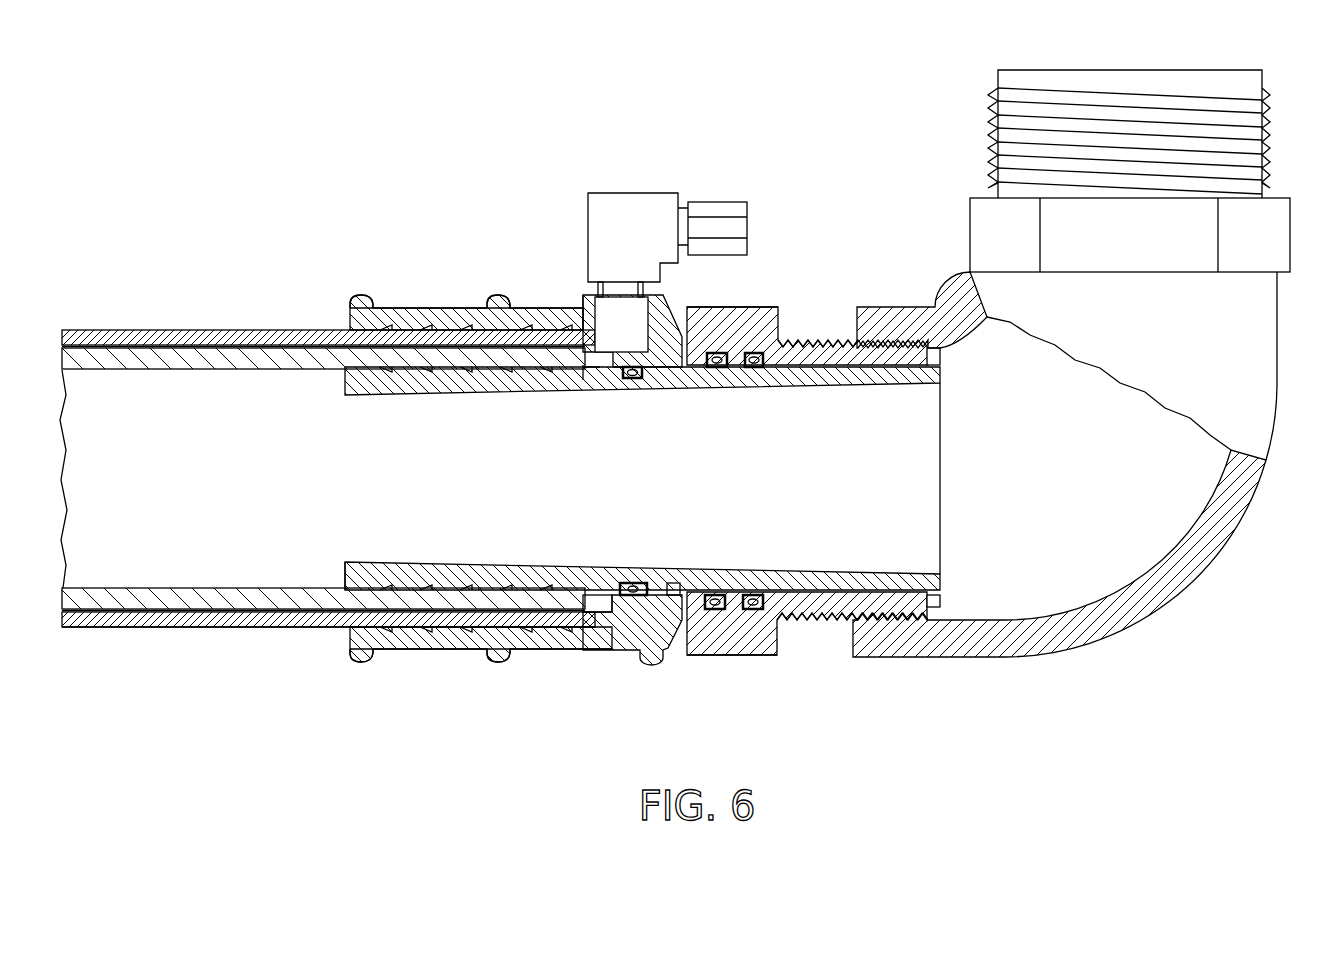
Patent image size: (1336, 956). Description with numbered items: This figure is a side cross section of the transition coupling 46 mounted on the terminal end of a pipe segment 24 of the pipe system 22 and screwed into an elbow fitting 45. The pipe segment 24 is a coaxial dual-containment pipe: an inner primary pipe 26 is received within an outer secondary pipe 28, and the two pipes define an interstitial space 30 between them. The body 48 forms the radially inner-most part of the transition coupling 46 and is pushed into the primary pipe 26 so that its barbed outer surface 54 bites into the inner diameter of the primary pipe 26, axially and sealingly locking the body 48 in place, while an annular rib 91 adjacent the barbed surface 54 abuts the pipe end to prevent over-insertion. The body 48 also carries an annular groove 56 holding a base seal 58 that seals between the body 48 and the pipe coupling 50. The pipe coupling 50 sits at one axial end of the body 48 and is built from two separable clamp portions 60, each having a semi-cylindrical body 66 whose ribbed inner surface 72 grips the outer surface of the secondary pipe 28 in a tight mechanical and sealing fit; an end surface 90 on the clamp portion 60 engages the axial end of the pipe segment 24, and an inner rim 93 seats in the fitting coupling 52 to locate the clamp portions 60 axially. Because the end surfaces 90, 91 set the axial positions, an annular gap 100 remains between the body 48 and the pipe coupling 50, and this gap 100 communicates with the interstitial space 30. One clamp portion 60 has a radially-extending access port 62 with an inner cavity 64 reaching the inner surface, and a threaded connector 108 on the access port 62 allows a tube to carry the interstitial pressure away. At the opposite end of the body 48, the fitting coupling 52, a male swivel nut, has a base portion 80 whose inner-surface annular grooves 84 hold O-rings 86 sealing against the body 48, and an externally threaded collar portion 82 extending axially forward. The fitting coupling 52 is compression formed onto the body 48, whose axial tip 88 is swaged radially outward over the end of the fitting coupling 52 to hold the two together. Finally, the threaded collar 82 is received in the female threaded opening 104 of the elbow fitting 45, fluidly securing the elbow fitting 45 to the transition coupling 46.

The pipe system 22 is at (97, 648).
The pipe segment 24 is at (143, 648).
The primary pipe 26 is at (175, 365).
The secondary pipe 28 is at (112, 335).
The interstitial space 30 is at (250, 348).
The elbow fitting 45 is at (1268, 380).
The transition coupling 46 is at (792, 247).
The body 48 is at (815, 586).
The pipe coupling 50 is at (405, 252).
The fitting coupling 52 is at (840, 298).
The barbed outer surface 54 is at (412, 585).
The annular groove 56 is at (675, 640).
The base seal 58 is at (633, 583).
The clamp portion 60 is at (380, 318).
The access port 62 is at (662, 311).
The inner cavity 64 is at (618, 300).
The semi-cylindrical body 66 is at (480, 318).
The ribbed inner surface 72 is at (415, 348).
The base portion 80 is at (757, 650).
The collar portion 82 is at (815, 624).
The annular grooves 84 is at (713, 598).
The O-ring 86 is at (712, 367).
The axial tip 88 is at (945, 598).
The end surface 90 is at (570, 328).
The annular rib 91 is at (575, 390).
The inner rim 93 is at (672, 584).
The annular gap 100 is at (617, 378).
The female threaded opening 104 is at (880, 346).
The threaded connector 108 is at (615, 200).